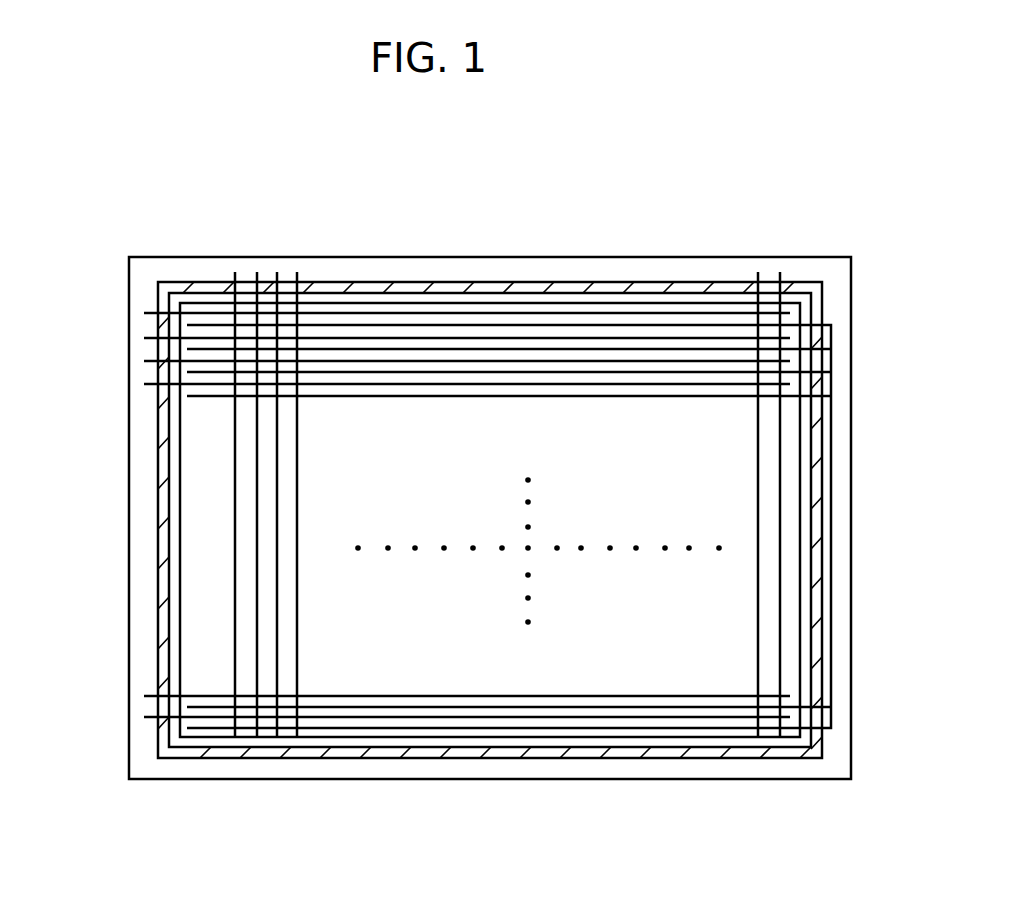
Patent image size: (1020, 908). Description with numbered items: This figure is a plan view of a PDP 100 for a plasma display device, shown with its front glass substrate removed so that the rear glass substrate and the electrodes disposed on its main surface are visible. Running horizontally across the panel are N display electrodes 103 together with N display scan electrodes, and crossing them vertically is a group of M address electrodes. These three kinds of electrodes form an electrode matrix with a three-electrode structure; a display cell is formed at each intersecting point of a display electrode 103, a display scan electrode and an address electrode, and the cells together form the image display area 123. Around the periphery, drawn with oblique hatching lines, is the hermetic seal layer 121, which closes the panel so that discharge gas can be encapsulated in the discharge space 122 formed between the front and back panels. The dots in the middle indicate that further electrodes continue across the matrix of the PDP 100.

The PDP 100 is at (852, 547).
The hermetic seal layer 121 is at (475, 288).
The discharge space 122 is at (580, 430).
The image display area 123 is at (179, 533).
The display electrode 103 is at (200, 397).